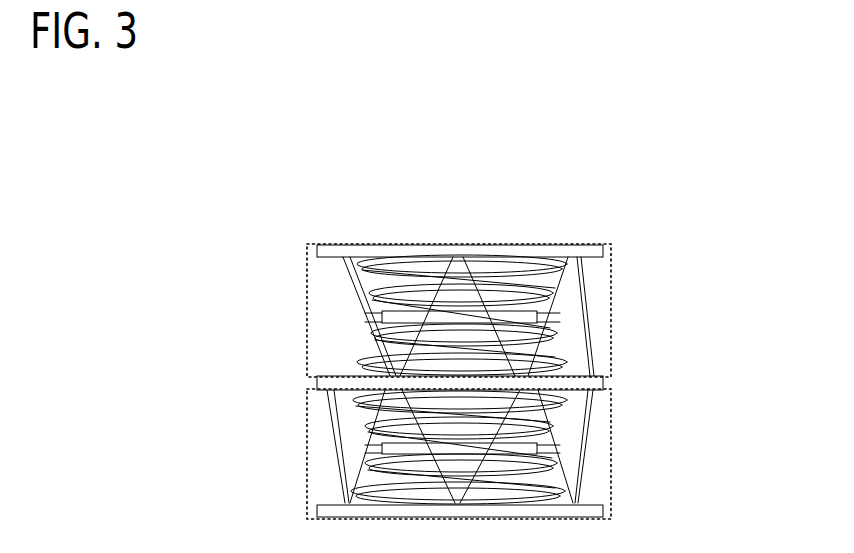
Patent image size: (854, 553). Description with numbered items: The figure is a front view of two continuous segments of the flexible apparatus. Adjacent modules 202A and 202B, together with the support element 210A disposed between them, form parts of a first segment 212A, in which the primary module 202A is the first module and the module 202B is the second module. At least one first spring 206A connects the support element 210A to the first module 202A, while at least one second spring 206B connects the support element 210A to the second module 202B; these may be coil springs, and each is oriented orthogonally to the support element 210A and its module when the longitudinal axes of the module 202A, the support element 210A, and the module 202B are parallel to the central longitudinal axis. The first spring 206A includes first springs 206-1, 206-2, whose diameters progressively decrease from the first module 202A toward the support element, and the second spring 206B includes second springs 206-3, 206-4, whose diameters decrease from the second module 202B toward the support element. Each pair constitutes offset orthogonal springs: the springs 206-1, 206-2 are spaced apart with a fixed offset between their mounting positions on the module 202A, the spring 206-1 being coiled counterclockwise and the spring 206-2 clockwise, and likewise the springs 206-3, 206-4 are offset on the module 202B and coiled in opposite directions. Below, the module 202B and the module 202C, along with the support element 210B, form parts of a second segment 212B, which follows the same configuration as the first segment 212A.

The primary module 202A is at (603, 247).
The module 202B is at (603, 376).
The module 202C is at (603, 507).
The first segment 212A is at (610, 266).
The second segment 212B is at (610, 417).
The support element 210A is at (538, 317).
The support element 210B is at (538, 447).
The first spring 206A is at (298, 333).
The second spring 206B is at (298, 400).
The first spring 206-1 is at (358, 262).
The first spring 206-2 is at (368, 293).
The second spring 206-3 is at (368, 333).
The second spring 206-4 is at (360, 366).